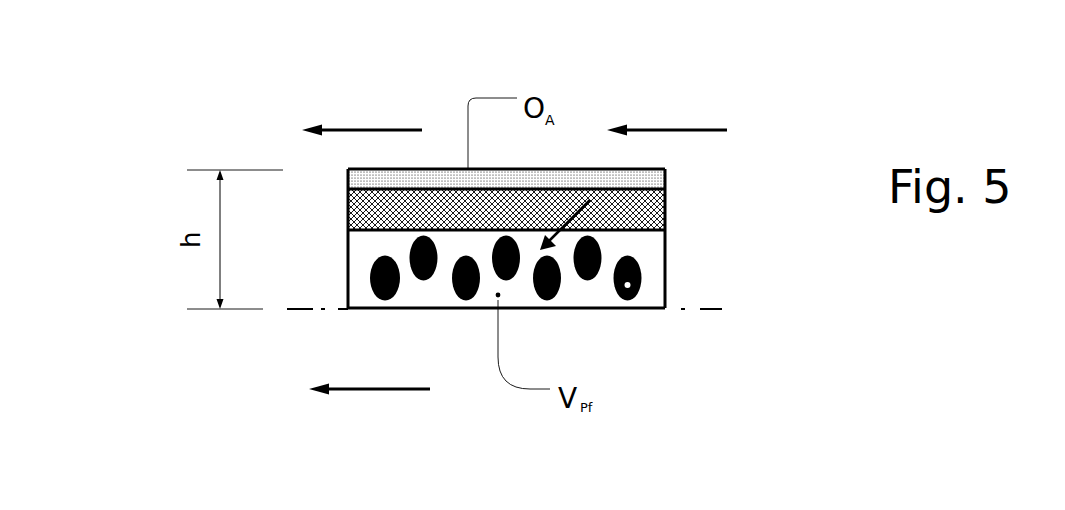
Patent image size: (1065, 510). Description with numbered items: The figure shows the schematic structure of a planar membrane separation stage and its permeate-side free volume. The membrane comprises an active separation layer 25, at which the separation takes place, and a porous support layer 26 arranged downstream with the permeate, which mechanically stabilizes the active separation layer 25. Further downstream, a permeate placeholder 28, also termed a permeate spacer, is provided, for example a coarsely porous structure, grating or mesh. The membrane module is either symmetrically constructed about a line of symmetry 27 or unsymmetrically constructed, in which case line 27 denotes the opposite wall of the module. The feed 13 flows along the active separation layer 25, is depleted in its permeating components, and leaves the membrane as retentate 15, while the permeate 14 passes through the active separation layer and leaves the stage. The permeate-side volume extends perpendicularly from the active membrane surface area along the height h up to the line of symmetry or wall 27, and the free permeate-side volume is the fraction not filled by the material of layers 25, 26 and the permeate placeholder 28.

The feed 13 is at (655, 129).
The permeate 14 is at (358, 390).
The retentate 15 is at (348, 129).
The active separation layer 25 is at (655, 182).
The porous support layer 26 is at (655, 222).
The line of symmetry 27 is at (712, 310).
The permeate placeholder 28 is at (627, 310).